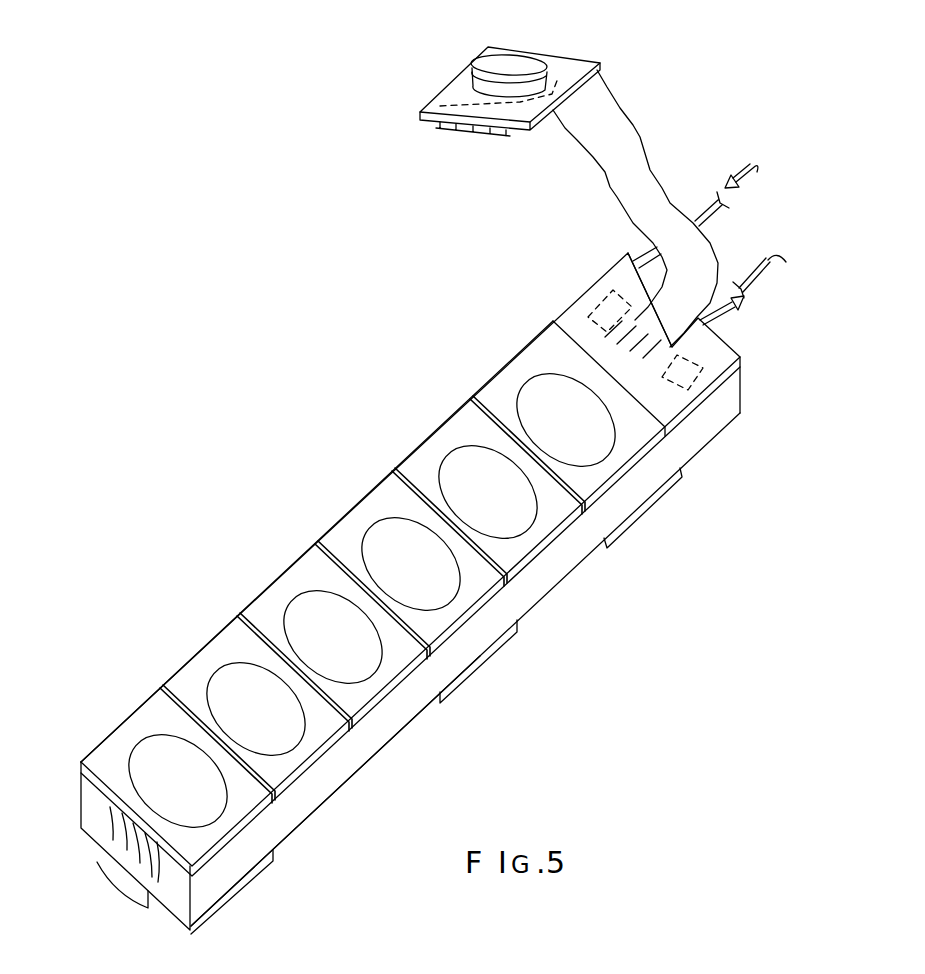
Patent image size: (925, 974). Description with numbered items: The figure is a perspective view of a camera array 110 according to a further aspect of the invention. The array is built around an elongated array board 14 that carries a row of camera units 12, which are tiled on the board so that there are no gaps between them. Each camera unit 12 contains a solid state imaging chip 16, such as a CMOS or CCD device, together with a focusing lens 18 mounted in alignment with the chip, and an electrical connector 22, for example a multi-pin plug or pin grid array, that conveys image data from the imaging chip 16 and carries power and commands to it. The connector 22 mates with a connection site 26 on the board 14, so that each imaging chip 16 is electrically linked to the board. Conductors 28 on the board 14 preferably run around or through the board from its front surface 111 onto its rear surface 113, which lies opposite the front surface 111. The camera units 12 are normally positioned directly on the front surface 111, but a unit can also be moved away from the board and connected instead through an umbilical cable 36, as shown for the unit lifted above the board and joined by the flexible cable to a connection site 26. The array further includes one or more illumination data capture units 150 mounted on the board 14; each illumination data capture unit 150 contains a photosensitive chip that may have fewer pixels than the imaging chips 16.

The camera unit 12 is at (607, 467).
The array board 14 is at (543, 583).
The imaging chip 16 is at (415, 120).
The focusing lens 18 is at (519, 62).
The connector 22 is at (454, 132).
The connection site 26 is at (607, 346).
The conductor 28 is at (637, 358).
The umbilical cable 36 is at (627, 137).
The camera array 110 is at (300, 506).
The front surface 111 is at (265, 608).
The rear surface 113 is at (343, 785).
The illumination data capture unit 150 is at (684, 495).